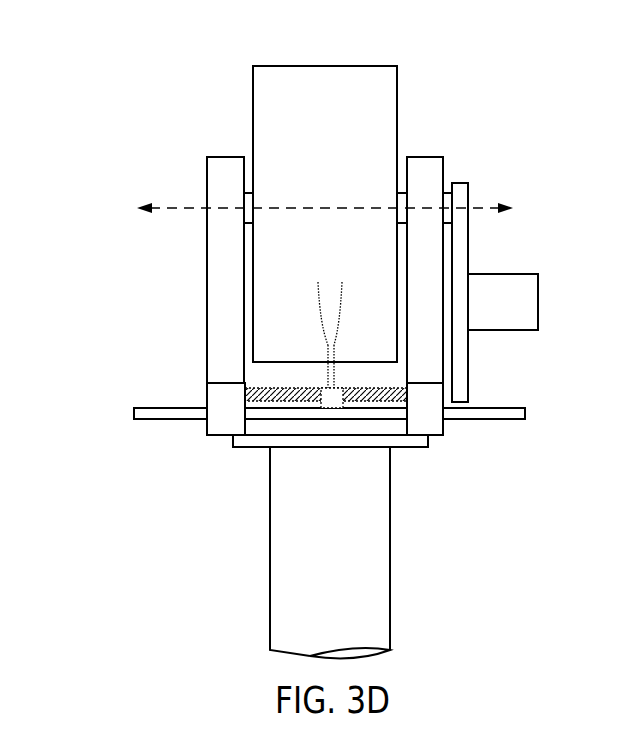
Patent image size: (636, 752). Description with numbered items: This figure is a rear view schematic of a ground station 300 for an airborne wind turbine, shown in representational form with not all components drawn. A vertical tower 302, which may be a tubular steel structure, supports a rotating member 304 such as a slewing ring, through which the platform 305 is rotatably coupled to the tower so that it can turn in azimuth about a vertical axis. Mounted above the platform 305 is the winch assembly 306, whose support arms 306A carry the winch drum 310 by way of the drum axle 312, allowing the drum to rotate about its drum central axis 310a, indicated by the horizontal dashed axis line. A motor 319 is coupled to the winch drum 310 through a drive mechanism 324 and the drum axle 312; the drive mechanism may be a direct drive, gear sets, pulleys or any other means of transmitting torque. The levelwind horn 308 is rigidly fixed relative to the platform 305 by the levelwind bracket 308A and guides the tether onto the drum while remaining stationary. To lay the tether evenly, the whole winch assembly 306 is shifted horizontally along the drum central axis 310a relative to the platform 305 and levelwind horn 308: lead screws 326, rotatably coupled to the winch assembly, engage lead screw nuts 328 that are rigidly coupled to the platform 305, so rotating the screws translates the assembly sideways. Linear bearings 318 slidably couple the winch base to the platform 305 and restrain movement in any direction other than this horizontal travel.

The ground station 300 is at (448, 44).
The vertical tower 302 is at (270, 602).
The rotating member 304 is at (258, 447).
The platform 305 is at (525, 413).
The winch assembly 306 is at (183, 154).
The support arms 306A is at (217, 310).
The levelwind horn 308 is at (318, 303).
The levelwind bracket 308A is at (328, 352).
The winch drum 310 is at (324, 75).
The drum central axis 310a is at (480, 208).
The drum axle 312 is at (449, 183).
The linear bearings 318 is at (210, 437).
The motor 319 is at (538, 305).
The drive mechanism 324 is at (468, 378).
The lead screws 326 is at (370, 402).
The lead screw nuts 328 is at (323, 408).